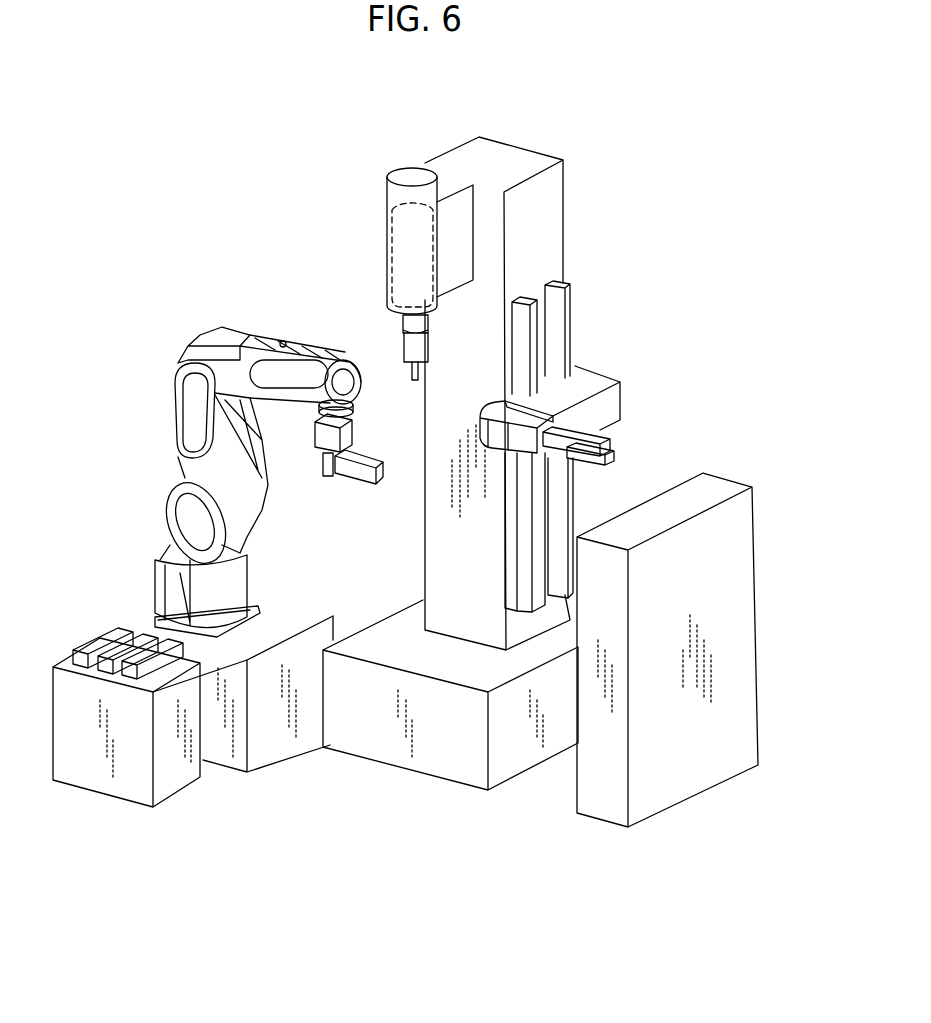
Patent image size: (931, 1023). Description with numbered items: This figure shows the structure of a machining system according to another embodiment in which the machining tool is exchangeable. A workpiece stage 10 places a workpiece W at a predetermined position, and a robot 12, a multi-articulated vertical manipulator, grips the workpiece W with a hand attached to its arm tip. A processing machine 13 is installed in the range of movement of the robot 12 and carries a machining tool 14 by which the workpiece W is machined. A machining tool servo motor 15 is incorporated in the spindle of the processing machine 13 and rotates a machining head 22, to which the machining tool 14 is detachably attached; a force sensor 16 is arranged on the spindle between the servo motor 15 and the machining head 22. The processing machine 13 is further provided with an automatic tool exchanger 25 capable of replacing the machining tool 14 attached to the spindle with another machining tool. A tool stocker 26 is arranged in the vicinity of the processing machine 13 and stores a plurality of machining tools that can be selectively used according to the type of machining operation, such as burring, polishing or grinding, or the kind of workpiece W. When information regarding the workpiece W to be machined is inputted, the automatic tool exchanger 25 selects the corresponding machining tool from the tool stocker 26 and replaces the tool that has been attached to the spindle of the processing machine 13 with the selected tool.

The workpiece stage 10 is at (183, 780).
The robot 12 is at (185, 393).
The processing machine 13 is at (525, 148).
The machining tool 14 is at (406, 372).
The machining tool servo motor 15 is at (388, 233).
The force sensor 16 is at (403, 323).
The machining head 22 is at (407, 349).
The automatic tool exchanger 25 is at (613, 405).
The tool stocker 26 is at (742, 587).
The workpiece W is at (93, 642).